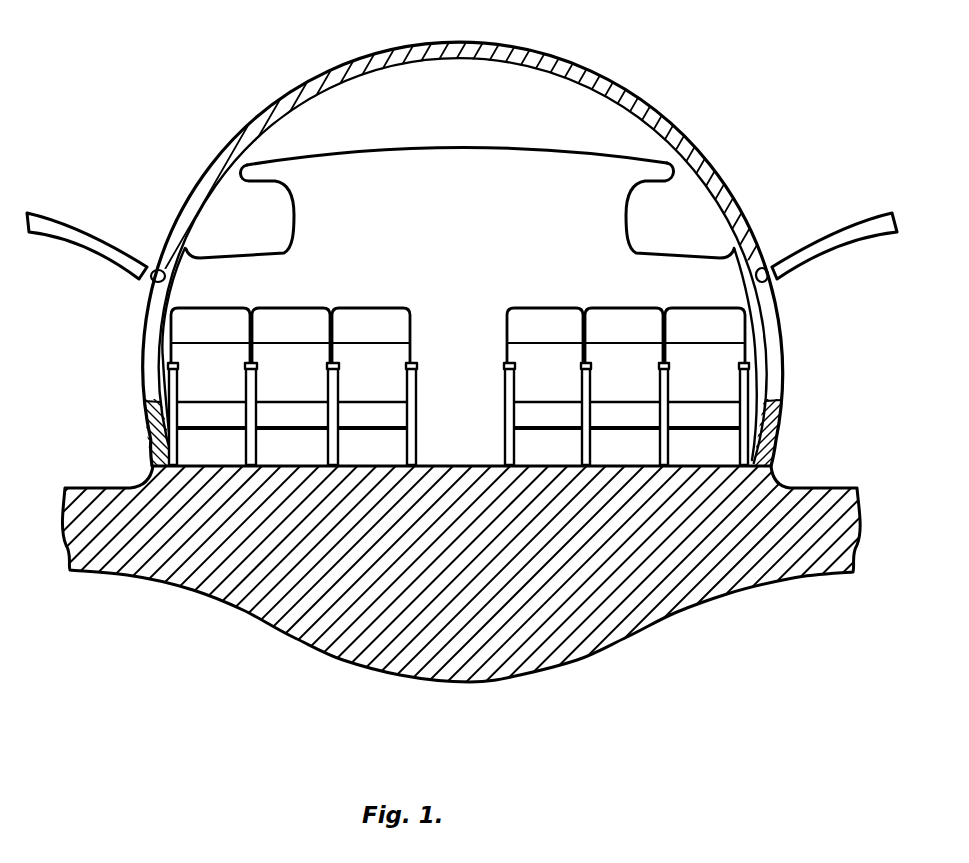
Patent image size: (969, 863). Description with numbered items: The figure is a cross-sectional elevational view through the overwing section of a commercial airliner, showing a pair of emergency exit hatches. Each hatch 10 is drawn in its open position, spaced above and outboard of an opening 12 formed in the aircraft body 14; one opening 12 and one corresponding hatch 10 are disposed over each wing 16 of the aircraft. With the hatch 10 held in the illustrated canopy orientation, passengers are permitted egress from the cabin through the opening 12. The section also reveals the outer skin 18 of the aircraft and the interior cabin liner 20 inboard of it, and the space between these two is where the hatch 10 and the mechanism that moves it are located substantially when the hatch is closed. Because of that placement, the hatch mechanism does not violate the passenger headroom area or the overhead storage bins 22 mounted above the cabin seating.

The hatch 10 is at (63, 218).
The opening 12 is at (145, 353).
The aircraft body 14 is at (205, 192).
The wing 16 is at (98, 485).
The outer skin 18 is at (343, 72).
The interior cabin liner 20 is at (177, 283).
The overhead storage bins 22 is at (290, 214).